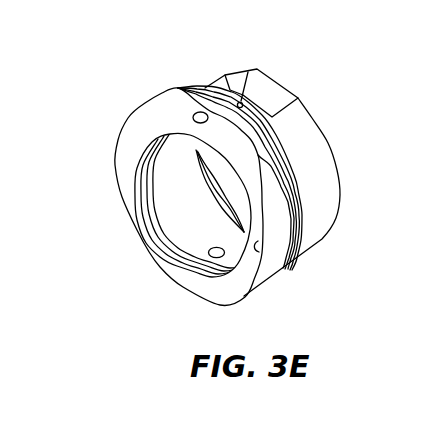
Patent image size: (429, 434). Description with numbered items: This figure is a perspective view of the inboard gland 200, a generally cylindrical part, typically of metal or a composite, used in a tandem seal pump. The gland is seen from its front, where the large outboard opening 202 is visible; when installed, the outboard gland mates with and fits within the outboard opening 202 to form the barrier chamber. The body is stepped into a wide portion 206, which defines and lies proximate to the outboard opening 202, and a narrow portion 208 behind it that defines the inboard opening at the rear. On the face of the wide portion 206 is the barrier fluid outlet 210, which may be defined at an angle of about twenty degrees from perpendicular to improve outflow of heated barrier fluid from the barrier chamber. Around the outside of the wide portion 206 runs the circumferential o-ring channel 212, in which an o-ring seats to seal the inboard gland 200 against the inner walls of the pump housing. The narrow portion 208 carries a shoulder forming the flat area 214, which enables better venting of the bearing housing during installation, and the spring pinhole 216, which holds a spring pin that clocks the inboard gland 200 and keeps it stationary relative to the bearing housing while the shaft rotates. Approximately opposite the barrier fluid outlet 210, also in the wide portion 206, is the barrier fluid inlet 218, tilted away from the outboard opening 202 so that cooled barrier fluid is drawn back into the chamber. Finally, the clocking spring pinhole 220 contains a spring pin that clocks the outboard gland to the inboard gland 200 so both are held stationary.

The inboard gland 200 is at (158, 66).
The outboard opening 202 is at (161, 216).
The wide portion 206 is at (127, 118).
The narrow portion 208 is at (322, 158).
The barrier fluid outlet 210 is at (199, 112).
The circumferential o-ring channel 212 is at (291, 226).
The flat area 214 is at (277, 96).
The spring pinhole 216 is at (248, 78).
The barrier fluid inlet 218 is at (209, 254).
The clocking spring pinhole 220 is at (259, 252).